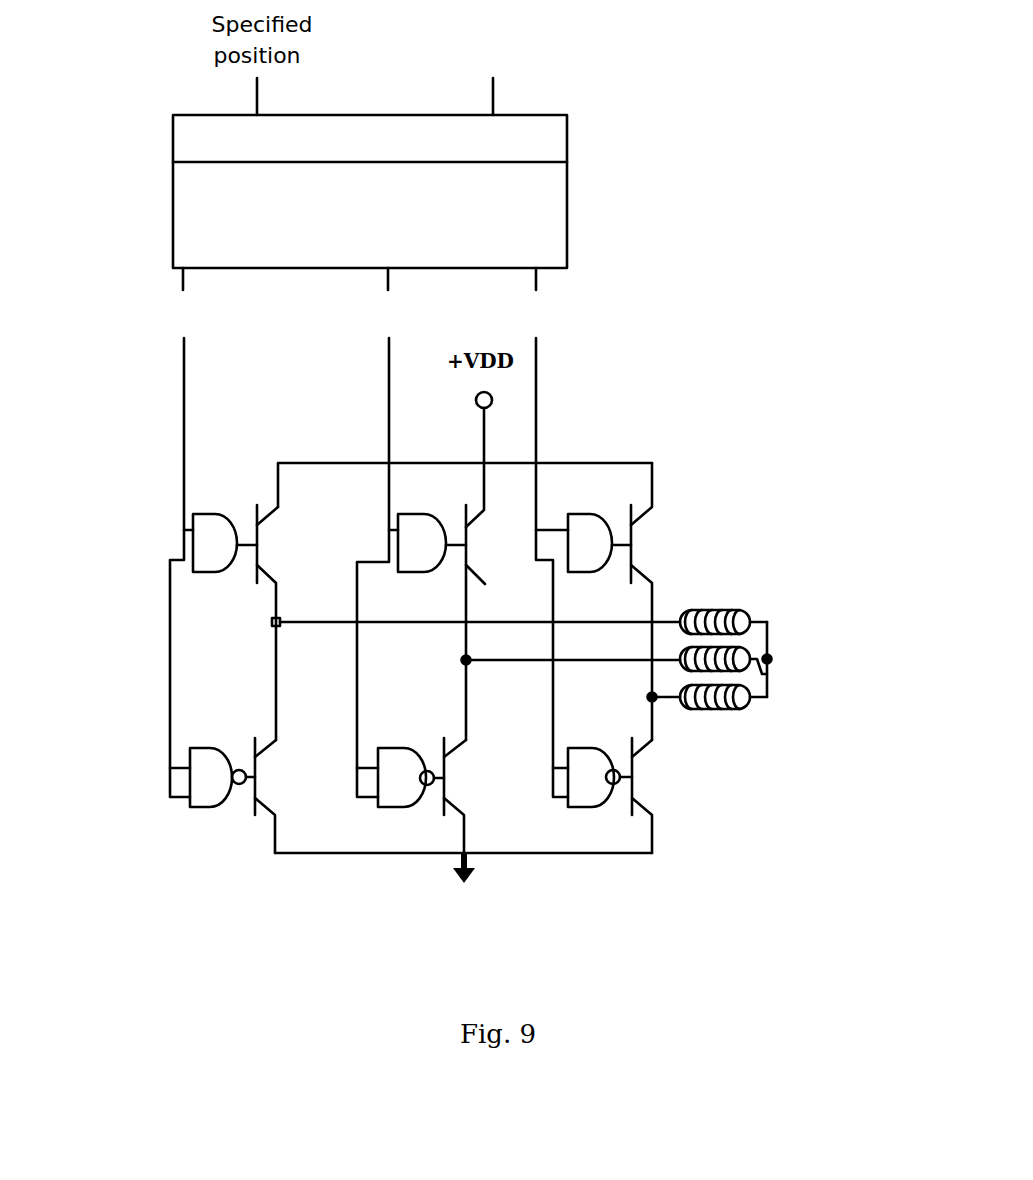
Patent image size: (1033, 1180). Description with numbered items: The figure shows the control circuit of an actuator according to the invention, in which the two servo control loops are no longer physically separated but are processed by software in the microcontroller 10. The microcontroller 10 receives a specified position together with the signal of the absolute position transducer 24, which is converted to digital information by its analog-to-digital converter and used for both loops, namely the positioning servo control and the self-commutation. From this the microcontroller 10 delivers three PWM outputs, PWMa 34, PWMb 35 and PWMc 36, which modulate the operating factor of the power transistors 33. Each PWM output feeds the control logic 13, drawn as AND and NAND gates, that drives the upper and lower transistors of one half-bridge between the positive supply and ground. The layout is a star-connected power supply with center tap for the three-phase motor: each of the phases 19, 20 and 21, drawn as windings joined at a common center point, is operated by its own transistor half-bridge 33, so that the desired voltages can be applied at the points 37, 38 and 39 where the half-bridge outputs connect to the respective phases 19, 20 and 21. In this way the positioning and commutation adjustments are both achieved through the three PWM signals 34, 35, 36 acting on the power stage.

The microcontroller 10 is at (552, 145).
The absolute position transducer 24 is at (537, 50).
The PWMa output 34 is at (173, 327).
The PWMb output 35 is at (380, 323).
The PWMc output 36 is at (548, 322).
The control logic 13 is at (205, 543).
The power transistors 33 is at (640, 545).
The phase connection point 37 is at (278, 625).
The phase connection point 38 is at (468, 662).
The phase connection point 39 is at (654, 699).
The phase 19 is at (725, 610).
The phase 20 is at (767, 680).
The phase 21 is at (735, 710).